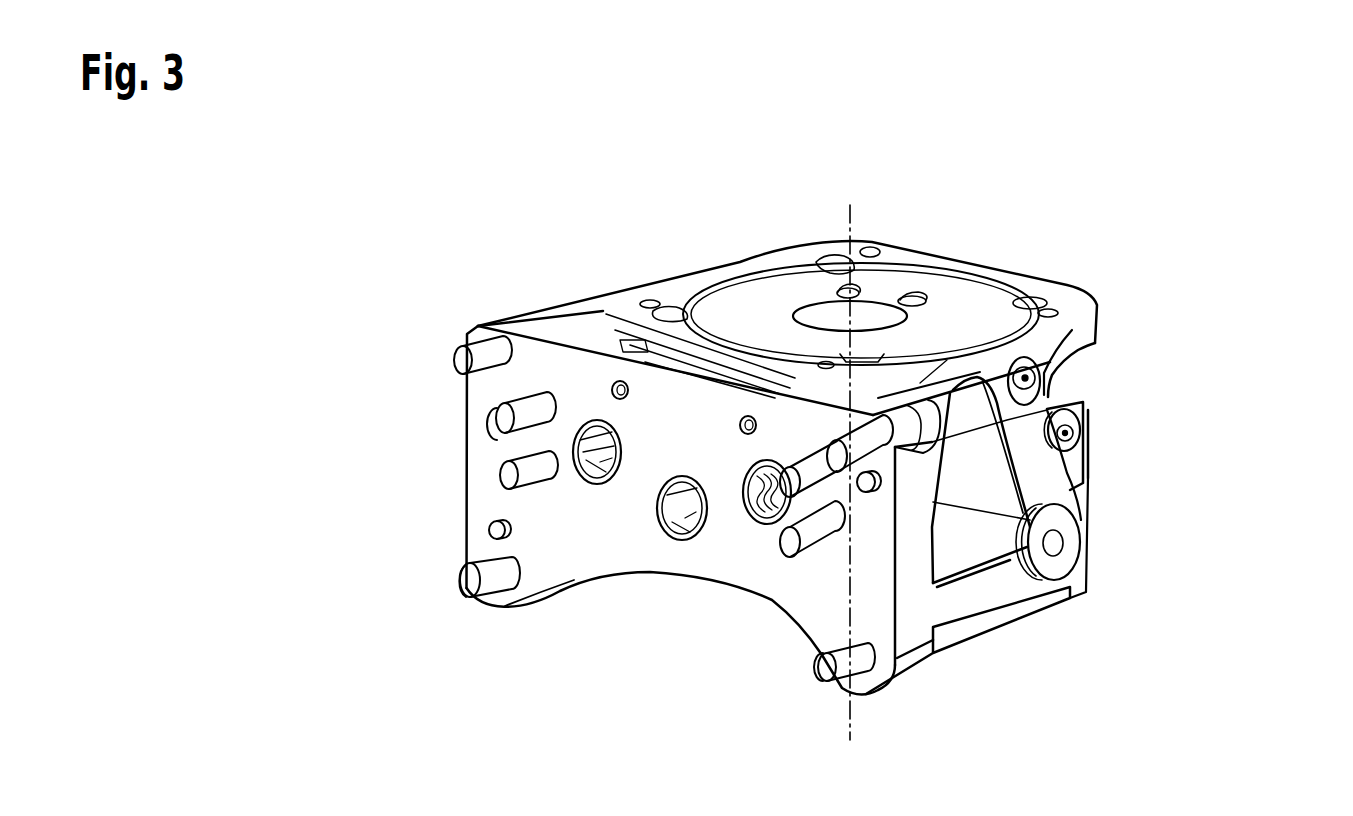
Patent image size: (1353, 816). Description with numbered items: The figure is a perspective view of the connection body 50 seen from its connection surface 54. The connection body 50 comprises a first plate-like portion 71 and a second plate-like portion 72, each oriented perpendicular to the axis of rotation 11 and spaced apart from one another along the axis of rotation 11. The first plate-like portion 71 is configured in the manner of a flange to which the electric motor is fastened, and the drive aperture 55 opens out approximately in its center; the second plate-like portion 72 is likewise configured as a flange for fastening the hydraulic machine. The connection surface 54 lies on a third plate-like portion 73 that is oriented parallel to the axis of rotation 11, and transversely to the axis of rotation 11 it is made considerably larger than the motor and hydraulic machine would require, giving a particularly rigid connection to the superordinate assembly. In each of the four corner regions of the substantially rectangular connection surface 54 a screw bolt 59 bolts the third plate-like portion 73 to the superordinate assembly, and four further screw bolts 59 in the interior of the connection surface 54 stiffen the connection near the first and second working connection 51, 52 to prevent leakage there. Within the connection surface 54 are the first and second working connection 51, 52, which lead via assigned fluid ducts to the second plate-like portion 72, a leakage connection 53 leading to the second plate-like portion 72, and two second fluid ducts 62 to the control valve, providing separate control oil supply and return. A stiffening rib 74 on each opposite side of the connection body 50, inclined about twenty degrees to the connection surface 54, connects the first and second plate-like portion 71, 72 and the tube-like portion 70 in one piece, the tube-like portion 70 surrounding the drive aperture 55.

The connection body 50 is at (1240, 163).
The connection surface 54 is at (573, 370).
The drive aperture 55 is at (876, 320).
The second fluid ducts 62 is at (621, 382).
The screw bolts 59 is at (485, 357).
The first working connection 51 is at (587, 481).
The second working connection 52 is at (742, 512).
The leakage connection 53 is at (660, 523).
The tube-like portion 70 is at (1078, 392).
The first plate-like portion 71 is at (1058, 340).
The second plate-like portion 72 is at (973, 600).
The third plate-like portion 73 is at (910, 553).
The stiffening rib 74 is at (1060, 490).
The axis of rotation 11 is at (851, 727).